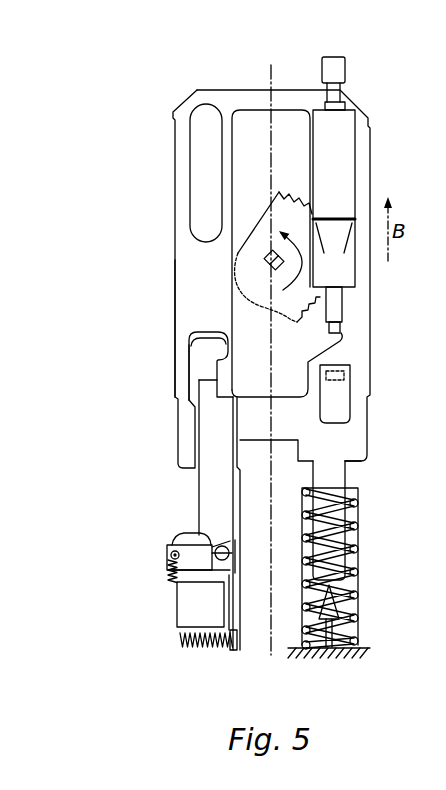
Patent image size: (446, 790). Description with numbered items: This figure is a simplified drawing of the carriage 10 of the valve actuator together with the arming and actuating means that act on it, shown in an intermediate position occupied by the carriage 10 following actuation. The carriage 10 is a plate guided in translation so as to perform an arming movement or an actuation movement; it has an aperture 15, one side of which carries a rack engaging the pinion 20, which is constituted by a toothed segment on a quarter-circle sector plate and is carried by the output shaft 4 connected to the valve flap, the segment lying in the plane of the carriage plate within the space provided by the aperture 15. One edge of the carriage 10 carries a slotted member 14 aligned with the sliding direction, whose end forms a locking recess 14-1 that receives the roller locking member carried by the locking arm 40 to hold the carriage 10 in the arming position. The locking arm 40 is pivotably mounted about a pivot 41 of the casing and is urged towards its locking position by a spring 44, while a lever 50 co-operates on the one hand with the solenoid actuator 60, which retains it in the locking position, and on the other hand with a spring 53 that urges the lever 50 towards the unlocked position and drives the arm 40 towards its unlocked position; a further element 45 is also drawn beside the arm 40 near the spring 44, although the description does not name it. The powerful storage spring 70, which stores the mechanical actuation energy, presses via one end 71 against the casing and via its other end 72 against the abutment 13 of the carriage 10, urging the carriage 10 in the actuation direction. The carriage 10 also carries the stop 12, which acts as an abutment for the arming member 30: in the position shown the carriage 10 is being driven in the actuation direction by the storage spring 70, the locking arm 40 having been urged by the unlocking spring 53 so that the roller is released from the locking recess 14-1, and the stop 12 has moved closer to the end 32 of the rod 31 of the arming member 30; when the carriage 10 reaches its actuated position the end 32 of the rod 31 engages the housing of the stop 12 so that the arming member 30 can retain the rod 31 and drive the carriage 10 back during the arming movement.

The carriage 10 is at (250, 98).
The aperture 15 is at (296, 150).
The arming member 30 is at (337, 148).
The rod 31 is at (343, 295).
The end of the rod 32 is at (343, 325).
The pinion 20 is at (269, 248).
The output shaft 4 is at (264, 258).
The locking recess 14-1 is at (222, 336).
The slotted member 14 is at (181, 372).
The stop 12 is at (345, 410).
The abutment 13 is at (363, 461).
The other end of the storage spring 72 is at (302, 494).
The storage spring 70 is at (358, 573).
The end of the storage spring 71 is at (358, 640).
The locking arm 40 is at (215, 494).
The pivot 41 is at (200, 532).
The lever 50 is at (239, 548).
The roller 45 is at (171, 553).
The spring 44 is at (168, 573).
The solenoid actuator 60 is at (192, 606).
The spring 53 is at (212, 642).